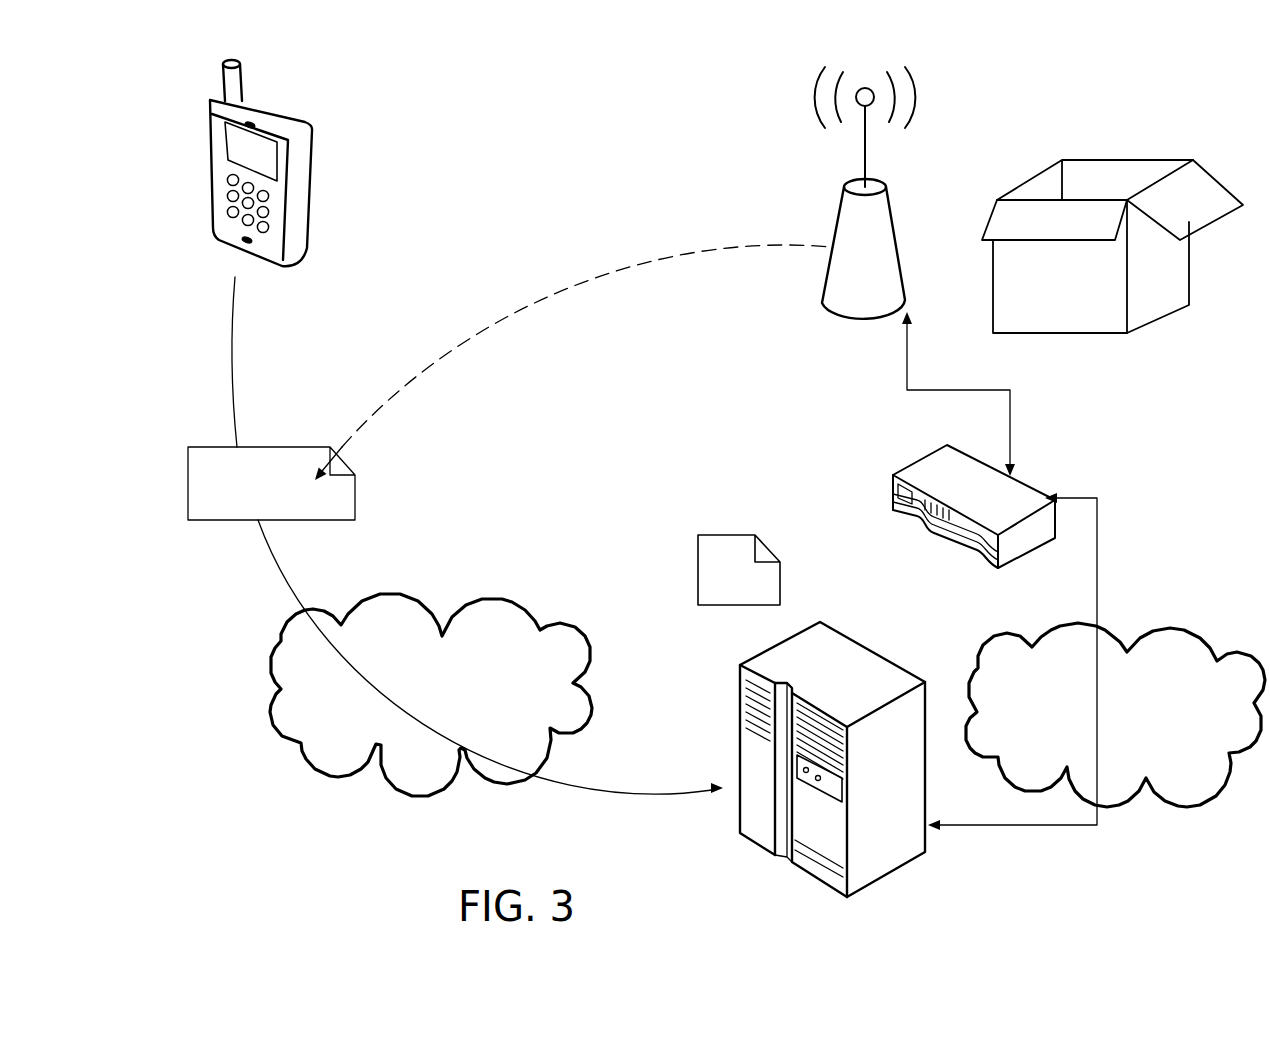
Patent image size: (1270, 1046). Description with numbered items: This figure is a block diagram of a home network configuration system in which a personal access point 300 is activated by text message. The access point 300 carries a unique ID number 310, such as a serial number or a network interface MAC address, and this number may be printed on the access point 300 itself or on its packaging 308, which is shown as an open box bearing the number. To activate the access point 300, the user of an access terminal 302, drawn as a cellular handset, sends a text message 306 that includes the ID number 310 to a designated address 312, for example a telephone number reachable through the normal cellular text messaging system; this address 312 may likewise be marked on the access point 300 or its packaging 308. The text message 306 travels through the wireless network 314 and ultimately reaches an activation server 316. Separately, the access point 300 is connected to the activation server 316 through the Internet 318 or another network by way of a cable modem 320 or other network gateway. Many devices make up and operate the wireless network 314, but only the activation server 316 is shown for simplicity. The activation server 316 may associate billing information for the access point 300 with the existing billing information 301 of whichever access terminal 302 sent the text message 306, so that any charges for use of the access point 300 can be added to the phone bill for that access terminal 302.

The personal access point 300 is at (888, 325).
The existing billing information 301 is at (698, 606).
The access terminal 302 is at (311, 254).
The text message 306 is at (217, 522).
The packaging 308 is at (1148, 322).
The unique ID number 310 is at (282, 491).
The designated address 312 is at (221, 462).
The wireless network 314 is at (523, 681).
The activation server 316 is at (876, 885).
The Internet 318 is at (1190, 750).
The cable modem 320 is at (998, 569).